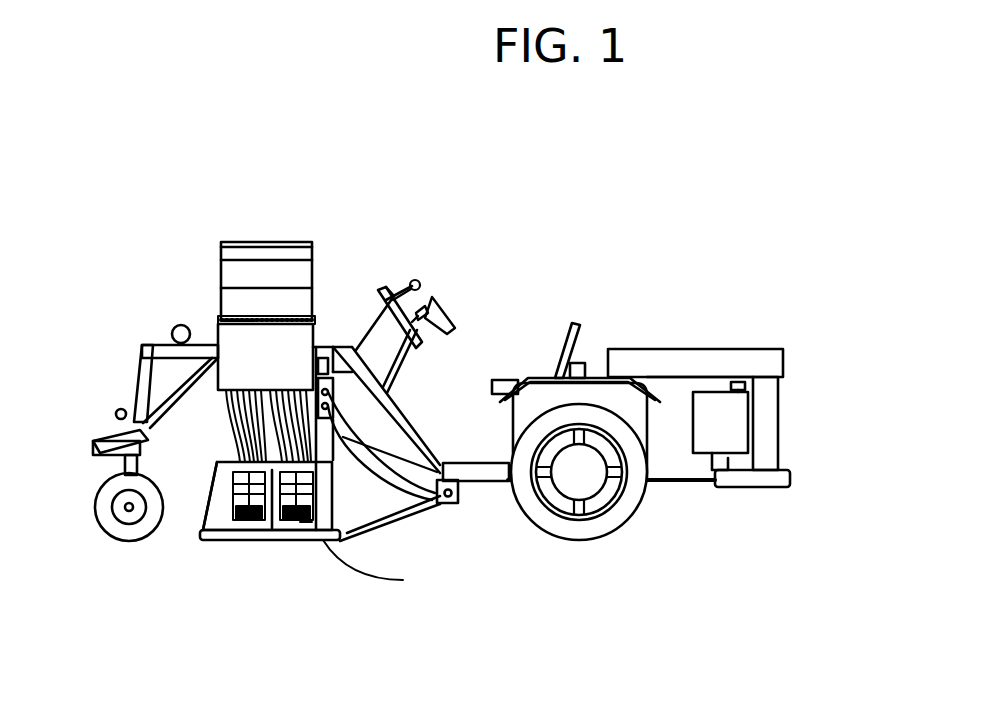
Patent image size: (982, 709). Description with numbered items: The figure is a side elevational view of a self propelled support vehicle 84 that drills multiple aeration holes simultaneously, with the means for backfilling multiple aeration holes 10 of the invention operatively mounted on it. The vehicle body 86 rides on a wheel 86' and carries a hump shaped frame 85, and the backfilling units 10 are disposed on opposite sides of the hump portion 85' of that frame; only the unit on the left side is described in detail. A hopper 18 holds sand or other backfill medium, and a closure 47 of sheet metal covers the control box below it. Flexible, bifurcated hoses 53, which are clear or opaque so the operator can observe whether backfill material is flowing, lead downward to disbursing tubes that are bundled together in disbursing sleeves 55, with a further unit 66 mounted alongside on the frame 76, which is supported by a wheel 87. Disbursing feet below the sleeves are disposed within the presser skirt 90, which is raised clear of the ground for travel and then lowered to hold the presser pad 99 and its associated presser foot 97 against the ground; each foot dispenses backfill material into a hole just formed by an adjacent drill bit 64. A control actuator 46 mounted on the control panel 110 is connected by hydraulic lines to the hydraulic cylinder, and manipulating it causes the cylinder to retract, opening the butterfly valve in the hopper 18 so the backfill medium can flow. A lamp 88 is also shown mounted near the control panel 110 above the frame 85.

The means for backfilling multiple aeration holes 10 is at (208, 218).
The hopper 18 is at (297, 263).
The closure 47 is at (243, 347).
The flexible bifurcated hoses 53 is at (276, 413).
The disbursing sleeves 55 is at (283, 513).
The planter unit 66 is at (272, 517).
The drill bit 64 is at (300, 523).
The frame 76 is at (233, 507).
The gauge wheel 87 is at (113, 530).
The presser pad 99 is at (222, 542).
The presser foot 97 is at (386, 574).
The presser skirt 90 is at (365, 514).
The hump shaped frame 85 is at (416, 419).
The hump portion 85' is at (376, 374).
The control panel 110 is at (382, 290).
The control actuator 46 is at (420, 282).
The lamp 88 is at (440, 307).
The self propelled support vehicle 84 is at (585, 252).
The tractor body 86 is at (725, 363).
The tractor wheel 86' is at (594, 517).